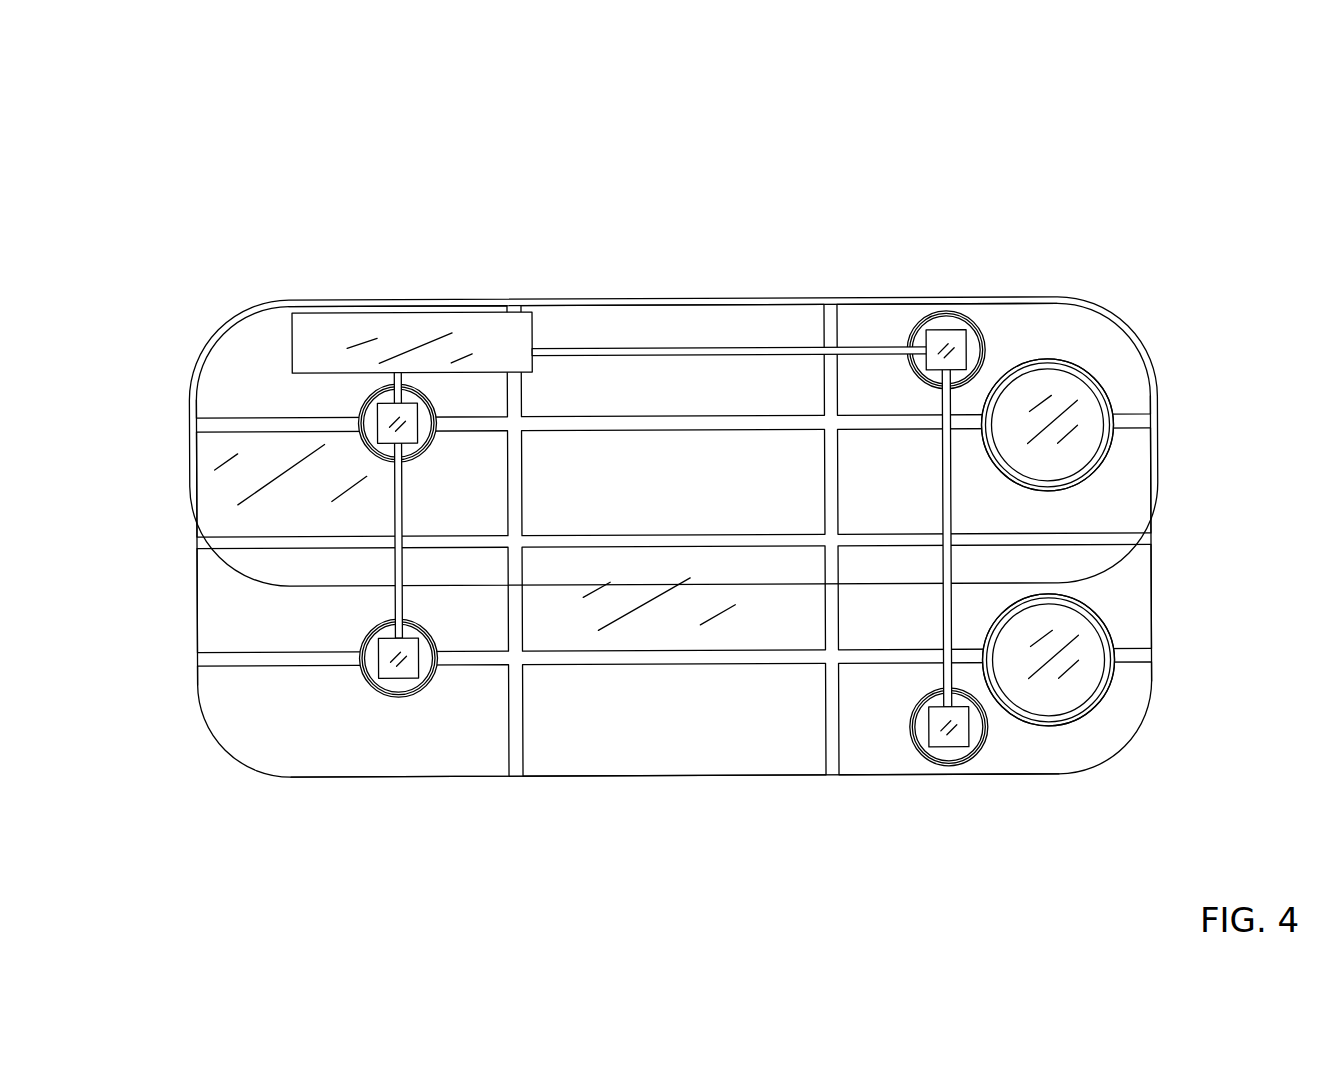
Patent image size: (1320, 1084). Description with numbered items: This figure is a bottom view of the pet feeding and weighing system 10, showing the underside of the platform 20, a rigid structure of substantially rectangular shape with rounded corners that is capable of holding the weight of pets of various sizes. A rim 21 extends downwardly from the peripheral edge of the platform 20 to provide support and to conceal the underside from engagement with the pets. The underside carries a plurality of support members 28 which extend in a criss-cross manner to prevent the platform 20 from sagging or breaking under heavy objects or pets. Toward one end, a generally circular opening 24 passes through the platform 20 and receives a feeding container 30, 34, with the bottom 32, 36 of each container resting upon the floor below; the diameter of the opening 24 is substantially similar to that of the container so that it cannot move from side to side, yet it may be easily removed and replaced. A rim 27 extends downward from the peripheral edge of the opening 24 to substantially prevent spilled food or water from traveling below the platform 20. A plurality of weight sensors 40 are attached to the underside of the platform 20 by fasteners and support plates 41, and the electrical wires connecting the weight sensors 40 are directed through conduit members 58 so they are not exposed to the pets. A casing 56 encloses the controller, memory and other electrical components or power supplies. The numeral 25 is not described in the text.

The pet feeding and weighing system 10 is at (230, 155).
The platform 20 is at (273, 617).
The rim 21 is at (707, 779).
The opening 24 is at (1060, 393).
The annular ring 25 is at (1115, 647).
The rim 27 is at (1103, 478).
The support member 28 is at (213, 540).
The feeding container 30 is at (1105, 623).
The bottom 32 is at (1103, 703).
The feeding container 34 is at (1112, 405).
The bottom 36 is at (1095, 362).
The weight sensor 40 is at (375, 425).
The support plate 41 is at (373, 408).
The casing 56 is at (498, 335).
The conduit member 58 is at (400, 507).